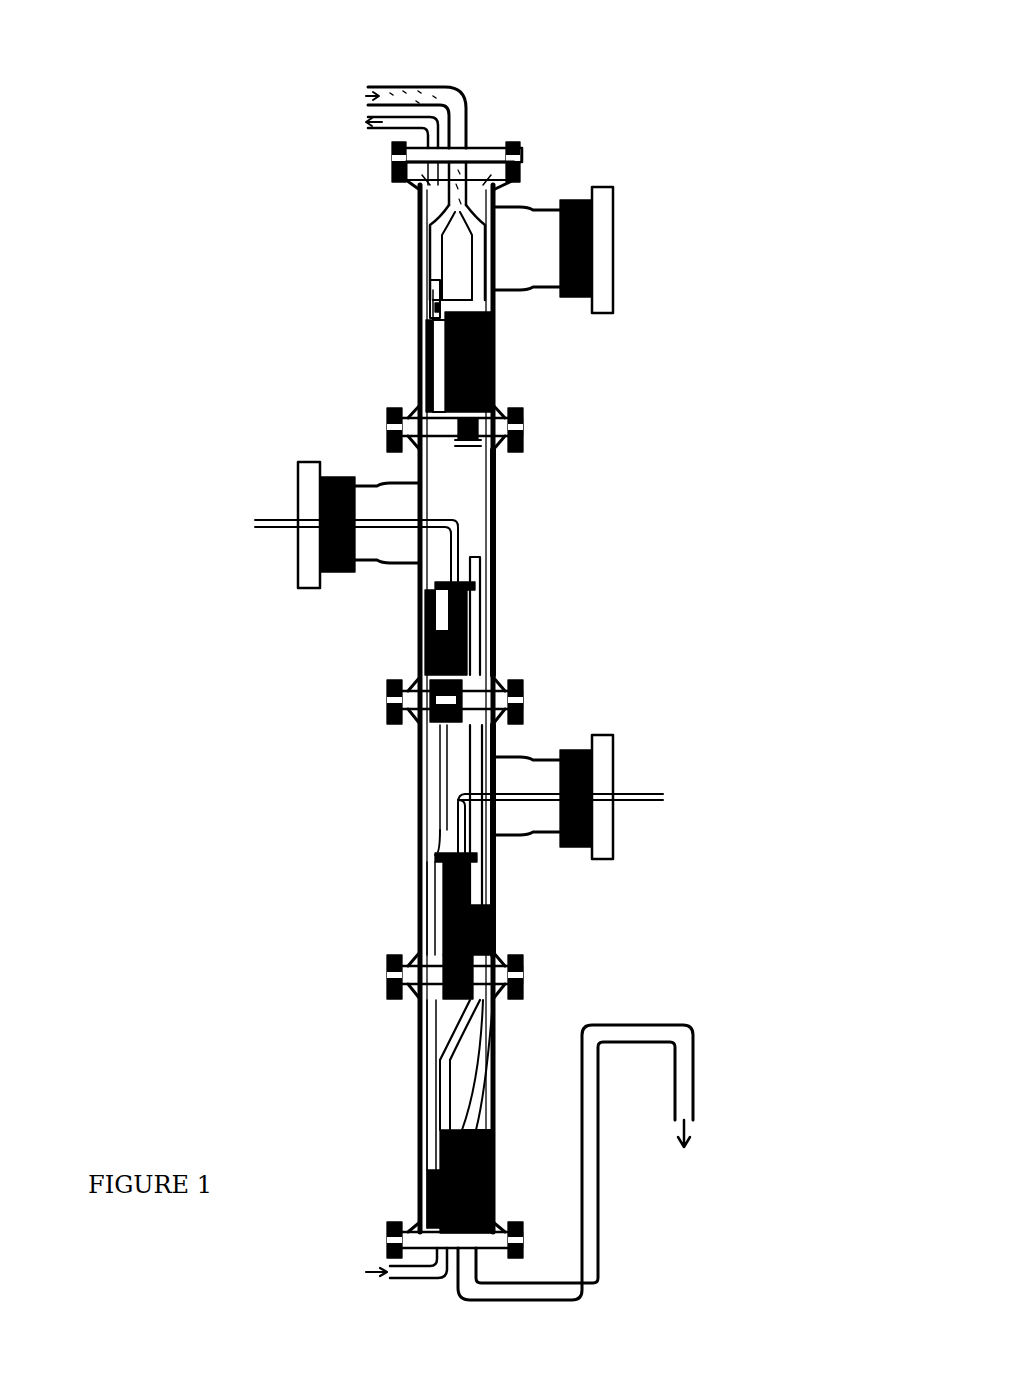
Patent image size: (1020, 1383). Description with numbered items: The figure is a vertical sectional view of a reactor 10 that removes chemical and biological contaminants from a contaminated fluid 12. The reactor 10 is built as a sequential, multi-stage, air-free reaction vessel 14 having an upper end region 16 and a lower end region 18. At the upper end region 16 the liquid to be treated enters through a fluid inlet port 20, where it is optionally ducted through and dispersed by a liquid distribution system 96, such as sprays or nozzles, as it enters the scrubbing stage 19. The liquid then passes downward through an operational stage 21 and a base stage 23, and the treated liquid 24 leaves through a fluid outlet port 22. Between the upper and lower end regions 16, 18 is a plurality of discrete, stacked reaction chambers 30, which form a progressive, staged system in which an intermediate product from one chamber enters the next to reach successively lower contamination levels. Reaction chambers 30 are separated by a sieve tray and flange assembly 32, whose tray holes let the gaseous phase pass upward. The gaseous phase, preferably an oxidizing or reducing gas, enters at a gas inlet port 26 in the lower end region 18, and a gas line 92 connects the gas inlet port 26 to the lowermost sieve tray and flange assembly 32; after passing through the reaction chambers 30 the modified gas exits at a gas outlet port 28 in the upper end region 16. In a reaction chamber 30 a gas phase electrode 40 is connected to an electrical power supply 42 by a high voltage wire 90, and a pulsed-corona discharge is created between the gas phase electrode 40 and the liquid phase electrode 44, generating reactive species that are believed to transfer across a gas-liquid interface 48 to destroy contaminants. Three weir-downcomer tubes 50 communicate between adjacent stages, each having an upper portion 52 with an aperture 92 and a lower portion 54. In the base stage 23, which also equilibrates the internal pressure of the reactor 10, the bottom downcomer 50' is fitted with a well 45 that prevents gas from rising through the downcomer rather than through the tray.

The reactor 10 is at (318, 24).
The contaminated fluid 12 is at (440, 92).
The reaction vessel 14 is at (426, 630).
The upper end region 16 is at (548, 153).
The lower end region 18 is at (506, 1194).
The scrubbing stage 19 is at (496, 363).
The fluid inlet port 20 is at (371, 86).
The operational stage 21 is at (708, 688).
The fluid outlet port 22 is at (670, 1114).
The base stage 23 is at (424, 1185).
The treated liquid 24 is at (679, 1150).
The gas inlet port 26 is at (400, 1272).
The gas outlet port 28 is at (381, 133).
The reaction chamber 30 is at (497, 627).
The sieve tray and flange assembly 32 is at (530, 446).
The gas phase electrode 40 is at (440, 845).
The electrical power supply 42 is at (196, 536).
The liquid phase electrode 44 is at (497, 938).
The distribution tube 45 is at (466, 1128).
The gas-liquid interface 48 is at (497, 576).
The weir-downcomer tube 50 is at (374, 284).
The bottom downcomer 50' is at (401, 1065).
The upper portion 52 is at (421, 300).
The lower portion 54 is at (432, 612).
The high voltage wire 90 is at (458, 684).
The aperture 92 is at (420, 325).
The liquid distribution system 96 is at (420, 195).